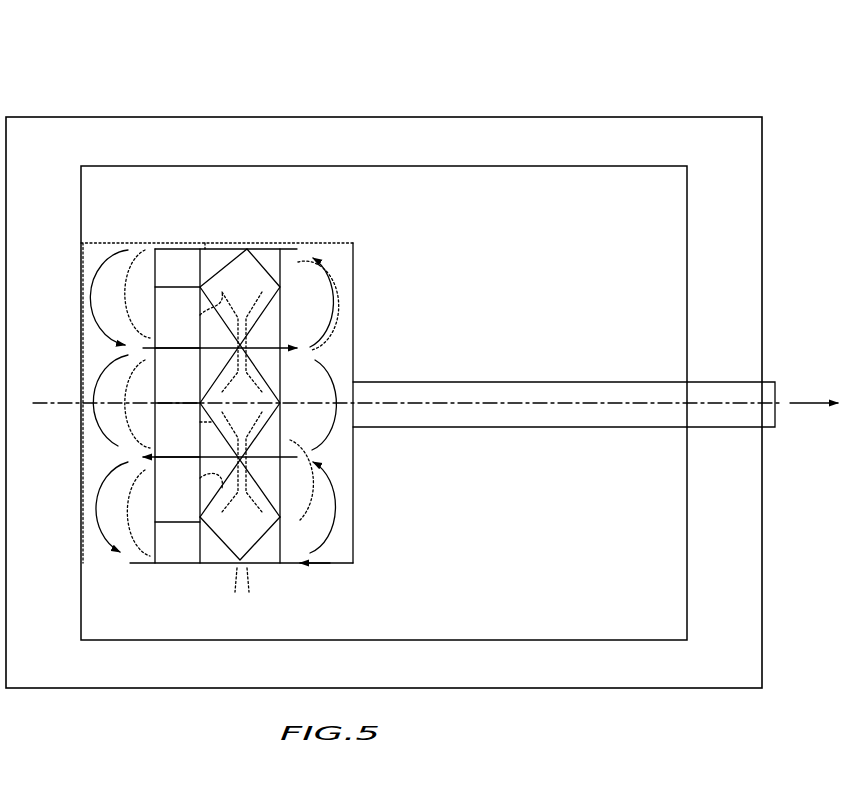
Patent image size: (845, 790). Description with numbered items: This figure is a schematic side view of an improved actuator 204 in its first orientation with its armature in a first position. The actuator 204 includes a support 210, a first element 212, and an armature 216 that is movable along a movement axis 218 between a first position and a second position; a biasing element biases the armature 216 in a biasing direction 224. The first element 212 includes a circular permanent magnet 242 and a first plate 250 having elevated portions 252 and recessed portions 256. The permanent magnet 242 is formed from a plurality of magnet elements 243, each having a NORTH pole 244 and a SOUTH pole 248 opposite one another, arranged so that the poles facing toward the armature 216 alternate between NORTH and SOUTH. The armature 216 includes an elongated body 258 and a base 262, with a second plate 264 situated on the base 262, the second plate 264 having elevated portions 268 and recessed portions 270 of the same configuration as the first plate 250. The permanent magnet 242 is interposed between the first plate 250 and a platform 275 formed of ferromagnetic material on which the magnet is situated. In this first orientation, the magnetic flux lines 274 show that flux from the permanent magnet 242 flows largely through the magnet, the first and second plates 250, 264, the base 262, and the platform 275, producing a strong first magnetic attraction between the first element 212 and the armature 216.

The actuator 204 is at (623, 97).
The support 210 is at (428, 116).
The first element 212 is at (164, 232).
The armature 216 is at (292, 238).
The movement axis 218 is at (450, 382).
The biasing direction 224 is at (805, 403).
The permanent magnet 242 is at (180, 243).
The magnet elements 243 is at (155, 274).
The NORTH pole 244 is at (150, 247).
The SOUTH pole 248 is at (205, 243).
The first plate 250 is at (230, 570).
The elevated portions 252 is at (192, 392).
The recessed portions 256 is at (246, 249).
The elongated body 258 is at (520, 382).
The base 262 is at (353, 525).
The second plate 264 is at (262, 568).
The elevated portions 268 is at (262, 336).
The recessed portions 270 is at (317, 246).
The magnetic flux lines 274 is at (270, 243).
The platform 275 is at (130, 565).